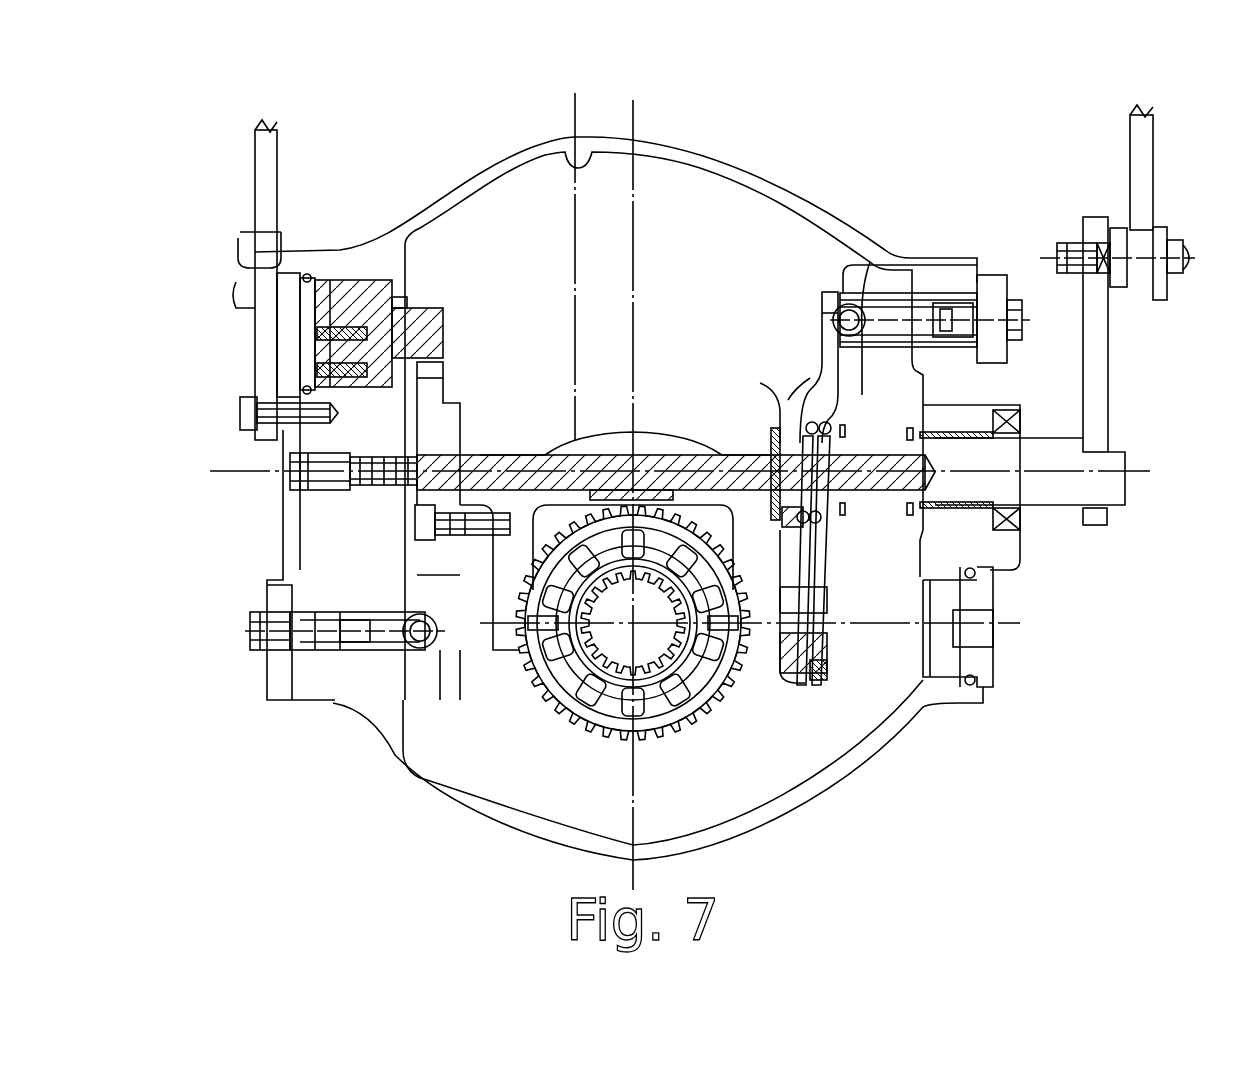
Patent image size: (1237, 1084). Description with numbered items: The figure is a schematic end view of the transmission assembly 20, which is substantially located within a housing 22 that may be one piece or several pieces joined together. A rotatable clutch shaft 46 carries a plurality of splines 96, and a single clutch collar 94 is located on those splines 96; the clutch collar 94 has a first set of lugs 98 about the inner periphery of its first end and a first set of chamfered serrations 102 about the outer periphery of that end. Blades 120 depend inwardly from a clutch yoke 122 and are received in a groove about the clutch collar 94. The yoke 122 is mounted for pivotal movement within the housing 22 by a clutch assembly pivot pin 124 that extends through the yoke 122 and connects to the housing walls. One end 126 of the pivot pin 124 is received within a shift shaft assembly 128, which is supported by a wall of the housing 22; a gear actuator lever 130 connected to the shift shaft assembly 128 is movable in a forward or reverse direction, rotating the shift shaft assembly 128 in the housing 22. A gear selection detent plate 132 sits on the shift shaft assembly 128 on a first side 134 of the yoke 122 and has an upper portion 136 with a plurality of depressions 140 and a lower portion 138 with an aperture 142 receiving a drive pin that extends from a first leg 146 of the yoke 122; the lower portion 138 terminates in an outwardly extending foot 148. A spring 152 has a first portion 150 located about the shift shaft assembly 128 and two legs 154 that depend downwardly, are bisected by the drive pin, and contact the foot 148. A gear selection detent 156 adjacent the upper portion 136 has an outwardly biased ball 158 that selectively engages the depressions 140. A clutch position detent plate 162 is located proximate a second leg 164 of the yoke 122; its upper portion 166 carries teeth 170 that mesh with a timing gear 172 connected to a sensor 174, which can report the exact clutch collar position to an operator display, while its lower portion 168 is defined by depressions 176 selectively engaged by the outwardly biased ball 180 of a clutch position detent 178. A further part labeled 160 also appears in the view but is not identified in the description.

The transmission assembly 20 is at (468, 116).
The housing 22 is at (450, 188).
The clutch shaft 46 is at (623, 653).
The clutch collar 94 is at (707, 693).
The splines 96 is at (653, 660).
The first set of lugs 98 is at (650, 710).
The first set of chamfered serrations 102 is at (572, 740).
The blades 120 is at (522, 690).
The clutch yoke 122 is at (650, 440).
The clutch assembly pivot pin 124 is at (500, 462).
The end of clutch assembly pivot pin 126 is at (873, 492).
The shift shaft assembly 128 is at (1030, 514).
The gear actuator lever 130 is at (1102, 363).
The gear selection detent plate 132 is at (817, 347).
The first side of clutch yoke 134 is at (757, 410).
The upper portion of gear selection detent plate 136 is at (805, 293).
The lower portion of gear selection detent plate 138 is at (870, 640).
The depressions 140 is at (830, 297).
The aperture 142 is at (793, 630).
The first leg of yoke 146 is at (740, 458).
The outwardly extending foot 148 is at (827, 693).
The first portion of spring 150 is at (832, 408).
The spring 152 is at (827, 423).
The legs of spring 154 is at (803, 683).
The gear selection detent 156 is at (897, 313).
The ball 158 is at (850, 307).
The bearing housing 160 is at (932, 383).
The clutch position detent plate 162 is at (445, 410).
The second leg of yoke 164 is at (500, 590).
The upper portion of clutch position detent plate 166 is at (413, 412).
The lower portion of clutch position detent plate 168 is at (422, 575).
The teeth 170 is at (440, 372).
The timing gear 172 is at (435, 315).
The sensor 174 is at (385, 290).
The depressions 176 is at (445, 665).
The clutch position detent 178 is at (345, 645).
The ball 180 is at (420, 640).